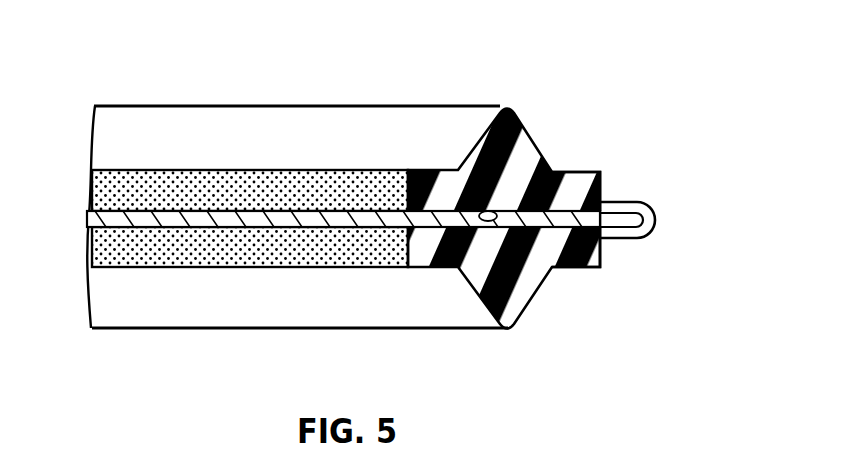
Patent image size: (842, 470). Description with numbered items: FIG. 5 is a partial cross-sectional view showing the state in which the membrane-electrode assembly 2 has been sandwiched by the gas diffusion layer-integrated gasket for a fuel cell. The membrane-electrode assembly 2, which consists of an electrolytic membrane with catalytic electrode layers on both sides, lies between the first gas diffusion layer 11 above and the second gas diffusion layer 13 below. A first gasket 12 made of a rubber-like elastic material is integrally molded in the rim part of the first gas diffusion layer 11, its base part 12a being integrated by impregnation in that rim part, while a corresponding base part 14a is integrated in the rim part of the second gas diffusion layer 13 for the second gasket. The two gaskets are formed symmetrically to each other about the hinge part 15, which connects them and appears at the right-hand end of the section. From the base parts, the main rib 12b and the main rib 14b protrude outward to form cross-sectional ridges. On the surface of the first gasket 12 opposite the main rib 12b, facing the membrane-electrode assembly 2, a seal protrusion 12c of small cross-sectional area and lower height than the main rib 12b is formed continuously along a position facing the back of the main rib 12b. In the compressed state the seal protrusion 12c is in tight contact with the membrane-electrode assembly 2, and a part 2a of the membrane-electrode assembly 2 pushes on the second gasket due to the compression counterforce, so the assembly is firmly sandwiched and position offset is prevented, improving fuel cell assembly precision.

The membrane-electrode assembly 2 is at (345, 211).
The part of the membrane-electrode assembly 2a is at (508, 230).
The first gas diffusion layer 11 is at (237, 178).
The first gasket 12 is at (535, 130).
The base part 12a is at (588, 187).
The main rib 12b is at (505, 108).
The seal protrusion 12c is at (496, 225).
The second gas diffusion layer 13 is at (266, 265).
The base part 14a is at (588, 263).
The main rib 14b is at (500, 333).
The hinge part 15 is at (652, 213).